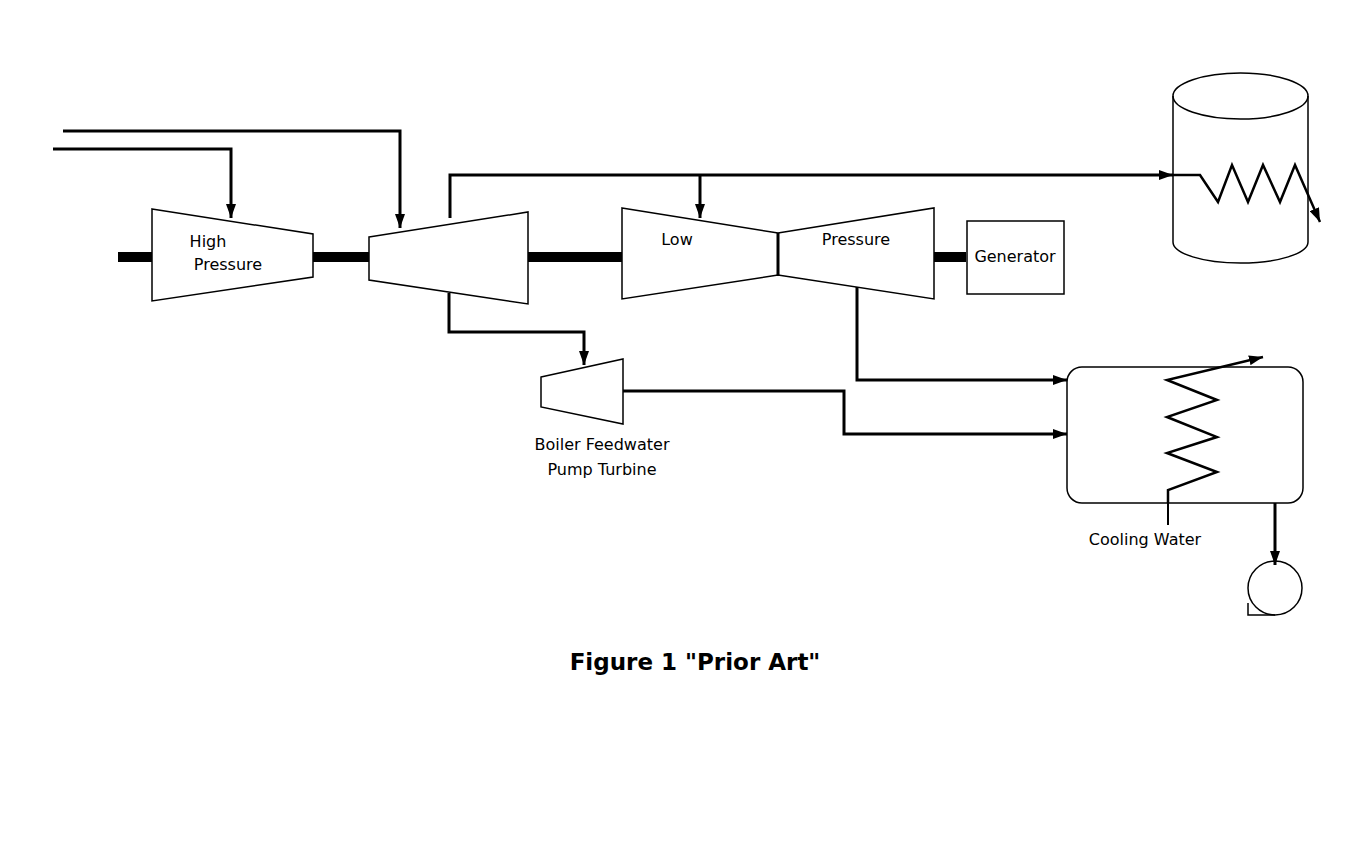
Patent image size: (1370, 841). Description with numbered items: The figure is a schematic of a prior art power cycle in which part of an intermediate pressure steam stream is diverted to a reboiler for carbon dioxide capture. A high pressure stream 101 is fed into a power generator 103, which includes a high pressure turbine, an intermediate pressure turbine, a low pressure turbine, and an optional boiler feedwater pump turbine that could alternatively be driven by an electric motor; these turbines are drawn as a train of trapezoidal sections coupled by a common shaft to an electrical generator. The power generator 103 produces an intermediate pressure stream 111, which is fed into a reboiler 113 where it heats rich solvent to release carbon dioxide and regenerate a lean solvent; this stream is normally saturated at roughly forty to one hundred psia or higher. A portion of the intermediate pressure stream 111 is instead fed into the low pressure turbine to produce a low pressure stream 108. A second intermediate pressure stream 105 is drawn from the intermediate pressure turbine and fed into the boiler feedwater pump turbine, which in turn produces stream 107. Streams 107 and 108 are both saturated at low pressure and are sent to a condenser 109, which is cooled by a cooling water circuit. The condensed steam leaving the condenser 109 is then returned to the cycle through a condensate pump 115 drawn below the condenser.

The high pressure stream 101 is at (265, 109).
The power generator 103 is at (389, 366).
The second intermediate pressure stream 105 is at (492, 332).
The stream 107 is at (778, 391).
The low pressure stream 108 is at (958, 380).
The condenser 109 is at (1305, 422).
The intermediate pressure stream 111 is at (947, 175).
The reboiler 113 is at (1305, 157).
The condensate pump 115 is at (1297, 553).